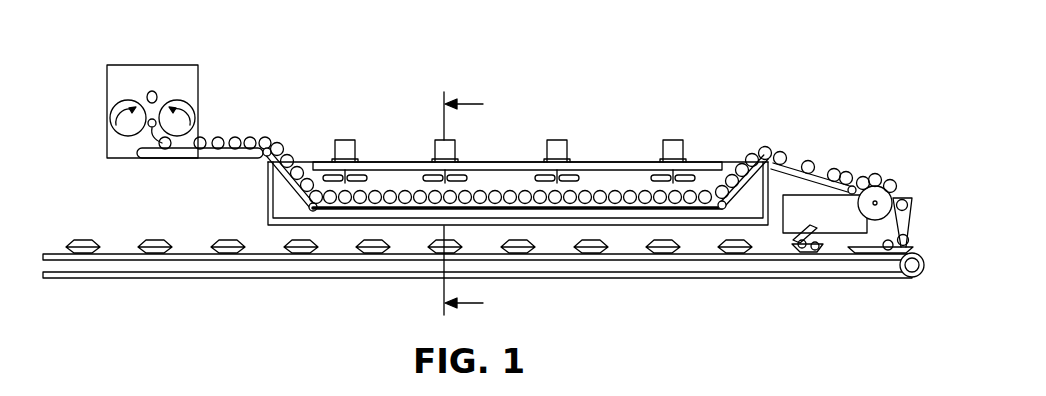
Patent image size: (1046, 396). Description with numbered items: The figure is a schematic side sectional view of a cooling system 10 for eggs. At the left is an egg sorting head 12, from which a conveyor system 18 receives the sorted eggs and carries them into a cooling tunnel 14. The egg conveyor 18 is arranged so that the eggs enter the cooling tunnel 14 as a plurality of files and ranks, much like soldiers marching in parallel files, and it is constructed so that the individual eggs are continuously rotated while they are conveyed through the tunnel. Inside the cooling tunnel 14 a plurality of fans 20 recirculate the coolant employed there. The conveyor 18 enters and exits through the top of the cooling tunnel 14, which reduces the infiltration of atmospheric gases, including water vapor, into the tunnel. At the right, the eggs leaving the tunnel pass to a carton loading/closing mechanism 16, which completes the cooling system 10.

The cooling system 10 is at (466, 62).
The egg sorting head 12 is at (214, 86).
The cooling tunnel 14 is at (628, 162).
The carton loading/closing mechanism 16 is at (861, 172).
The conveyor system 18 is at (270, 173).
The fans 20 is at (433, 142).